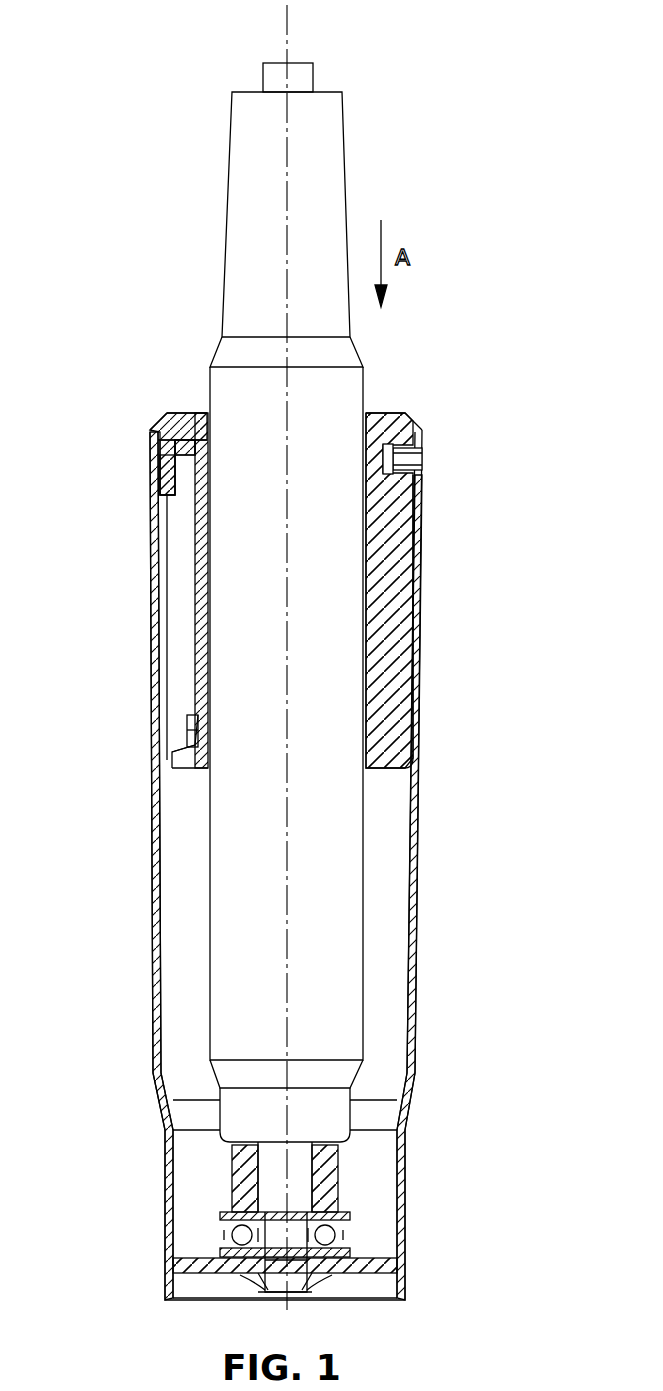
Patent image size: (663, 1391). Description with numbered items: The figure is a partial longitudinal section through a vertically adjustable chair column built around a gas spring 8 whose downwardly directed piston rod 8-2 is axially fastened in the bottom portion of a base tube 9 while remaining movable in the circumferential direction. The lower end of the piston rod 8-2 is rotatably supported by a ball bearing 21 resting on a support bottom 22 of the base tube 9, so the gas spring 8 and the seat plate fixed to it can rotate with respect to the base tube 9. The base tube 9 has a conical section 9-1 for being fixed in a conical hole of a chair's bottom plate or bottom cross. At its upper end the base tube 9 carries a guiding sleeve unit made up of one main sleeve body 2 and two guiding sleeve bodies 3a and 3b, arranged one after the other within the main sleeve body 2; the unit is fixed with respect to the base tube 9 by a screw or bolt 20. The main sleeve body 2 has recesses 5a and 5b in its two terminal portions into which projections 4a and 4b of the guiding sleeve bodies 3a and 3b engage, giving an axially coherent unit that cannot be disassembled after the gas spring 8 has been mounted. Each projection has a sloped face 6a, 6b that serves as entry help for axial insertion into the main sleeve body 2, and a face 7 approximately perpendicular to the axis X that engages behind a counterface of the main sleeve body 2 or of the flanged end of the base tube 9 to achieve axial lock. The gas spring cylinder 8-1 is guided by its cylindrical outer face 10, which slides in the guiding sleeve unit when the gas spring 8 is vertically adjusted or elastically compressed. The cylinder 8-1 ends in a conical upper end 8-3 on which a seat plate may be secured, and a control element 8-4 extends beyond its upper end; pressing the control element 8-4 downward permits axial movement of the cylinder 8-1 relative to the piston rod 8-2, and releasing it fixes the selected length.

The axis X is at (290, 36).
The main sleeve body 2 is at (326, 576).
The guiding sleeve body 3a is at (408, 425).
The guiding sleeve body 3b is at (410, 715).
The projection 4a is at (165, 426).
The projection 4b is at (205, 748).
The recess 5a is at (170, 452).
The recess 5b is at (195, 722).
The sloped face 6a is at (168, 455).
The sloped face 6b is at (200, 728).
The face 7 is at (190, 418).
The gas spring 8 is at (315, 677).
The gas spring cylinder 8-1 is at (335, 1000).
The piston rod 8-2 is at (305, 1195).
The conical upper end 8-3 is at (245, 240).
The control element 8-4 is at (305, 78).
The base tube 9 is at (420, 800).
The conical section 9-1 is at (413, 1012).
The cylindrical outer face 10 is at (368, 875).
The screw or bolt 20 is at (412, 460).
The ball bearing 21 is at (240, 1225).
The support bottom 22 is at (200, 1256).